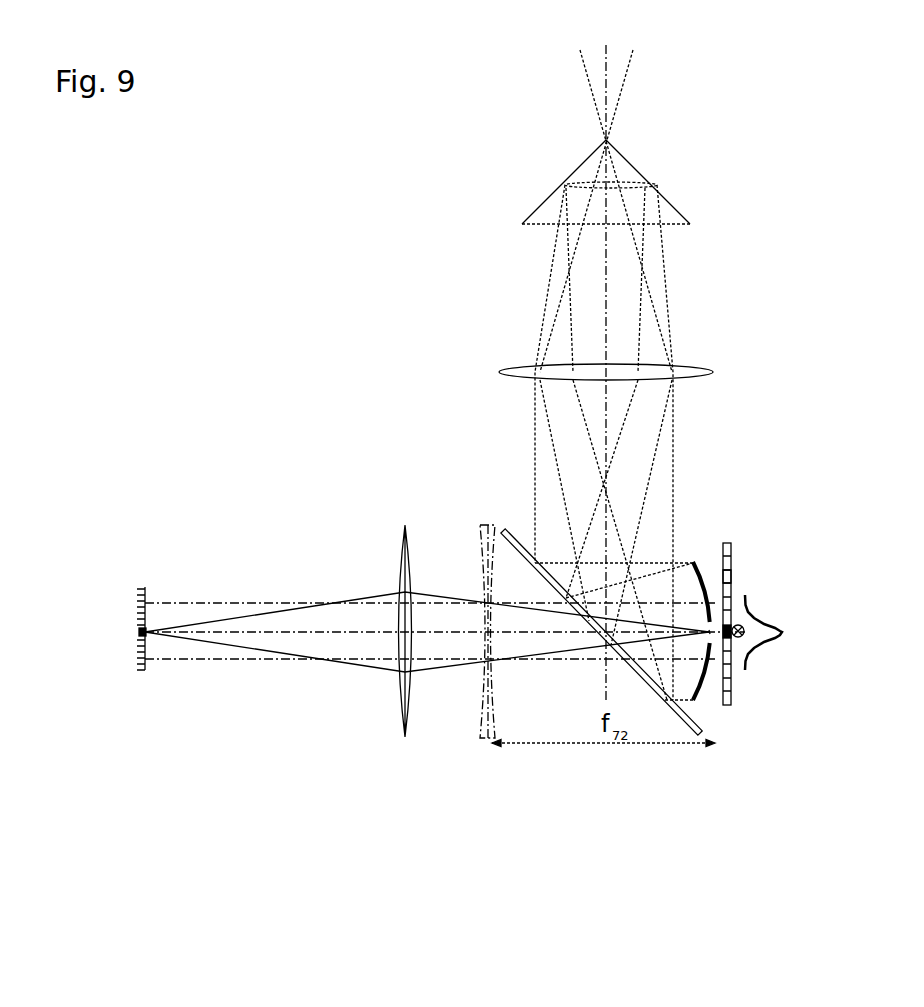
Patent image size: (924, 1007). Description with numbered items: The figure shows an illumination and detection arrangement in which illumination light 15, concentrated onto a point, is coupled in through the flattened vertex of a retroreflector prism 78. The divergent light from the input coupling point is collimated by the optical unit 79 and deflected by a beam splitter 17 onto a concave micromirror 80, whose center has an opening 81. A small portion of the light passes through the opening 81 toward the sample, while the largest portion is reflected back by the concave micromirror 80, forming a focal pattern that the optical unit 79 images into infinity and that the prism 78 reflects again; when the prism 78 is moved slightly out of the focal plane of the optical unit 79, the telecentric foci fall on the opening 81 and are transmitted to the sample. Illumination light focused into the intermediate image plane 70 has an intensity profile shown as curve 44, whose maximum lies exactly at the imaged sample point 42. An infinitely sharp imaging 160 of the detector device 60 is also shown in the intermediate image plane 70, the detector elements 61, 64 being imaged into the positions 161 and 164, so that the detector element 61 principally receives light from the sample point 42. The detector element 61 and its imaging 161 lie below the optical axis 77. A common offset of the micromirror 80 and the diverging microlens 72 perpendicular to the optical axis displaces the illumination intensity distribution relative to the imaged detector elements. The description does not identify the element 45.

The illumination light 15 is at (613, 95).
The retroreflector prism 78 is at (542, 218).
The optical unit 79 is at (518, 370).
The diverging microlens 72 is at (480, 532).
The beam splitter 17 is at (517, 540).
The concave micromirror 80 is at (693, 562).
The intermediate image plane 70 is at (798, 583).
The imaging of the detector device 160 is at (742, 559).
The imaged position of detector element 164 is at (732, 578).
The imaging of the detector element 161 is at (733, 637).
The sample point 42 is at (745, 628).
The intensity curve 44 is at (768, 615).
The opening 81 is at (712, 640).
The detector device 60 is at (104, 599).
The detector element 64 is at (140, 610).
The detector element 61 is at (139, 632).
The optical axis 77 is at (253, 628).
The illumination ray 45 is at (245, 650).